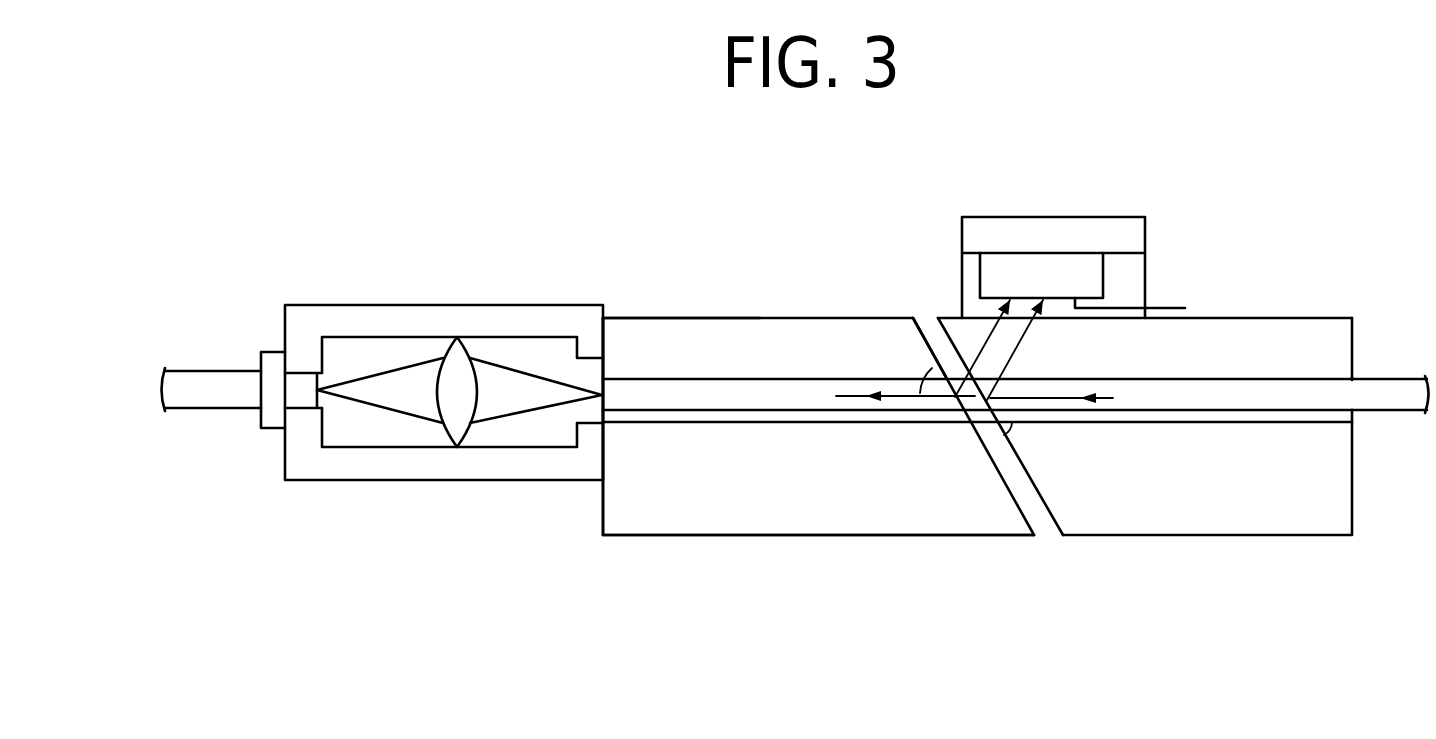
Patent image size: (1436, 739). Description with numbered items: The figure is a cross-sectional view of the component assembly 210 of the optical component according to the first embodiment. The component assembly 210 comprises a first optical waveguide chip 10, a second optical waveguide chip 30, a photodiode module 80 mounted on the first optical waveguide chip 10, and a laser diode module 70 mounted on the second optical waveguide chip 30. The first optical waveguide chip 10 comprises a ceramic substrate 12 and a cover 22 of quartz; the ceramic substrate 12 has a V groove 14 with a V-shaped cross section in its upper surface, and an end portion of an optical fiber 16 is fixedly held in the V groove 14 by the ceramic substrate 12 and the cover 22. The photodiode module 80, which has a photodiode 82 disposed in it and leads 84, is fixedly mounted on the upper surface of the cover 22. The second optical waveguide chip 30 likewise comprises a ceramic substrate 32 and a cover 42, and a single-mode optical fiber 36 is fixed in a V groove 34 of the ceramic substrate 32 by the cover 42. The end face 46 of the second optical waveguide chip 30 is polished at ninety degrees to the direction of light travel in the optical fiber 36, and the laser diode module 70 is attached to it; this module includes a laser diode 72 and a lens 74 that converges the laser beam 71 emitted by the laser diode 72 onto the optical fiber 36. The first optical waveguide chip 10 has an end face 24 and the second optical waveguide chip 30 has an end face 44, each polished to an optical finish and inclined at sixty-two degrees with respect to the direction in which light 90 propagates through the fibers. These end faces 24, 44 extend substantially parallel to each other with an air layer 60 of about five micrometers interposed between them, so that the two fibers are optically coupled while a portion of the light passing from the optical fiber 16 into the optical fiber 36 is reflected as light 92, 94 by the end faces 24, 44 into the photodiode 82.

The first optical waveguide chip 10 is at (1327, 541).
The ceramic substrate 12 is at (1322, 500).
The V groove 14 is at (1225, 423).
The optical fiber 16 is at (1373, 393).
The cover 22 is at (1270, 340).
The end face 24 is at (1047, 517).
The second optical waveguide chip 30 is at (687, 290).
The ceramic substrate 32 is at (702, 510).
The V groove 34 is at (770, 423).
The single-mode optical fiber 36 is at (830, 400).
The cover 42 is at (767, 340).
The end face 44 is at (998, 480).
The end face 46 is at (603, 500).
The air layer 60 is at (930, 330).
The laser diode module 70 is at (404, 302).
The laser beam 71 is at (504, 383).
The laser diode 72 is at (273, 350).
The lens 74 is at (455, 427).
The photodiode module 80 is at (1019, 214).
The photodiode 82 is at (1068, 270).
The leads 84 is at (1172, 306).
The light 90 is at (1067, 397).
The reflected light 92 is at (1015, 350).
The reflected light 94 is at (962, 340).
The component assembly 210 is at (1277, 87).